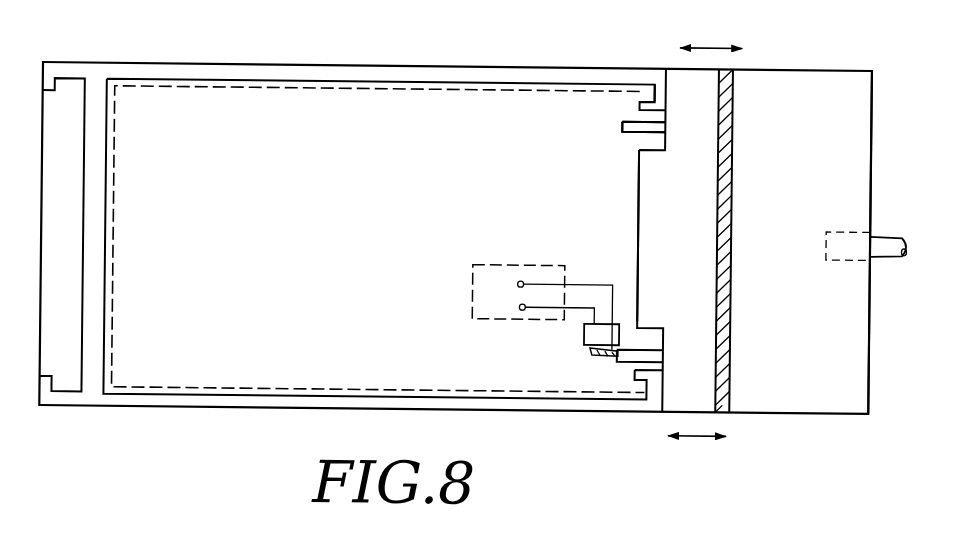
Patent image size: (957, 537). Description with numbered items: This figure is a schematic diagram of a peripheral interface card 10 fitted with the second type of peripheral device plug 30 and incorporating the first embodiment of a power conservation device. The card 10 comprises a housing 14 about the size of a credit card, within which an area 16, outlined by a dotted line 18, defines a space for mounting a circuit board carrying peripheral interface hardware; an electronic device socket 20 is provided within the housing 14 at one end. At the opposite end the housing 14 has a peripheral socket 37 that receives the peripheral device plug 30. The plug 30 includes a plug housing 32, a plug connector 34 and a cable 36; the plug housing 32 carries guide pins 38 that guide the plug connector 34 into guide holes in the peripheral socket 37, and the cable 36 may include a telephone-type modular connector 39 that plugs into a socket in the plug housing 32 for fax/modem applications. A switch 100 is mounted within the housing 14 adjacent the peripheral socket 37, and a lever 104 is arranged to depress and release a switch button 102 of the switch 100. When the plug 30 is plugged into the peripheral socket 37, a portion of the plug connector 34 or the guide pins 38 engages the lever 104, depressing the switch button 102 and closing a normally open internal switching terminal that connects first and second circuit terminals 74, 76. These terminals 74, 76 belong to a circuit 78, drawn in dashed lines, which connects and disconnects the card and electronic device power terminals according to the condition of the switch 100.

The peripheral interface card 10 is at (420, 60).
The housing 14 is at (350, 64).
The area 16 is at (283, 100).
The dotted line 18 is at (171, 81).
The electronic device socket 20 is at (52, 117).
The peripheral device plug 30 is at (781, 58).
The plug housing 32 is at (827, 77).
The plug connector 34 is at (650, 192).
The cable 36 is at (892, 231).
The peripheral socket 37 is at (598, 118).
The guide pins 38 is at (627, 115).
The RJ-11 connector 39 is at (846, 223).
The first circuit terminal 74 is at (550, 276).
The second circuit terminal 76 is at (542, 305).
The circuit 78 is at (498, 257).
The switch 100 is at (587, 331).
The switch button 102 is at (589, 342).
The lever 104 is at (608, 350).